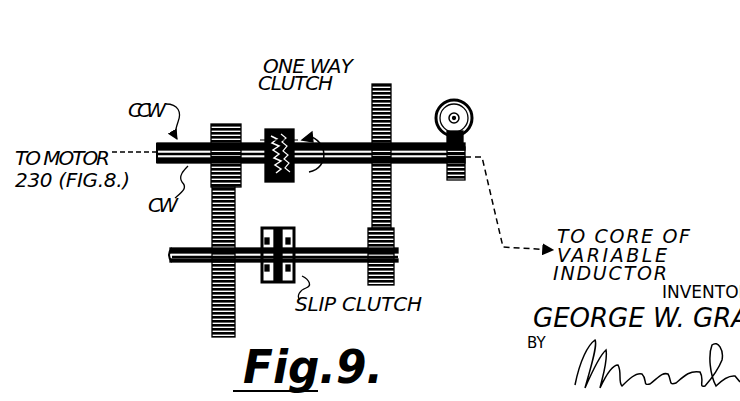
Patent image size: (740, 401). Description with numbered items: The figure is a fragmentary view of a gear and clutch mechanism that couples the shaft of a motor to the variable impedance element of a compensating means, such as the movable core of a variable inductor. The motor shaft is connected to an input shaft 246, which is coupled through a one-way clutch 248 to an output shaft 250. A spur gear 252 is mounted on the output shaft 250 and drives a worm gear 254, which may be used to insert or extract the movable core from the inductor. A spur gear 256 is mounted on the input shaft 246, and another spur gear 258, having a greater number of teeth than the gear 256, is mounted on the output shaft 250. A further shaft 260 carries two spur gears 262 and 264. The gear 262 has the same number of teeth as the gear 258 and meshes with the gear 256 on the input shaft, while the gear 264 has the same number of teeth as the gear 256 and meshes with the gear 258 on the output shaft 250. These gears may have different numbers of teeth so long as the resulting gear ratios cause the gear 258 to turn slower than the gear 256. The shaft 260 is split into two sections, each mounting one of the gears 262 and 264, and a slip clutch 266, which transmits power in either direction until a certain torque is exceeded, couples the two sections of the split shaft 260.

The input shaft 246 is at (220, 124).
The one-way clutch 248 is at (286, 129).
The output shaft 250 is at (400, 163).
The spur gear 252 is at (466, 145).
The worm gear 254 is at (468, 106).
The spur gear 256 is at (276, 100).
The spur gear 258 is at (382, 84).
The shaft 260 is at (320, 249).
The spur gear 262 is at (212, 335).
The spur gear 264 is at (394, 272).
The slip clutch 266 is at (268, 282).